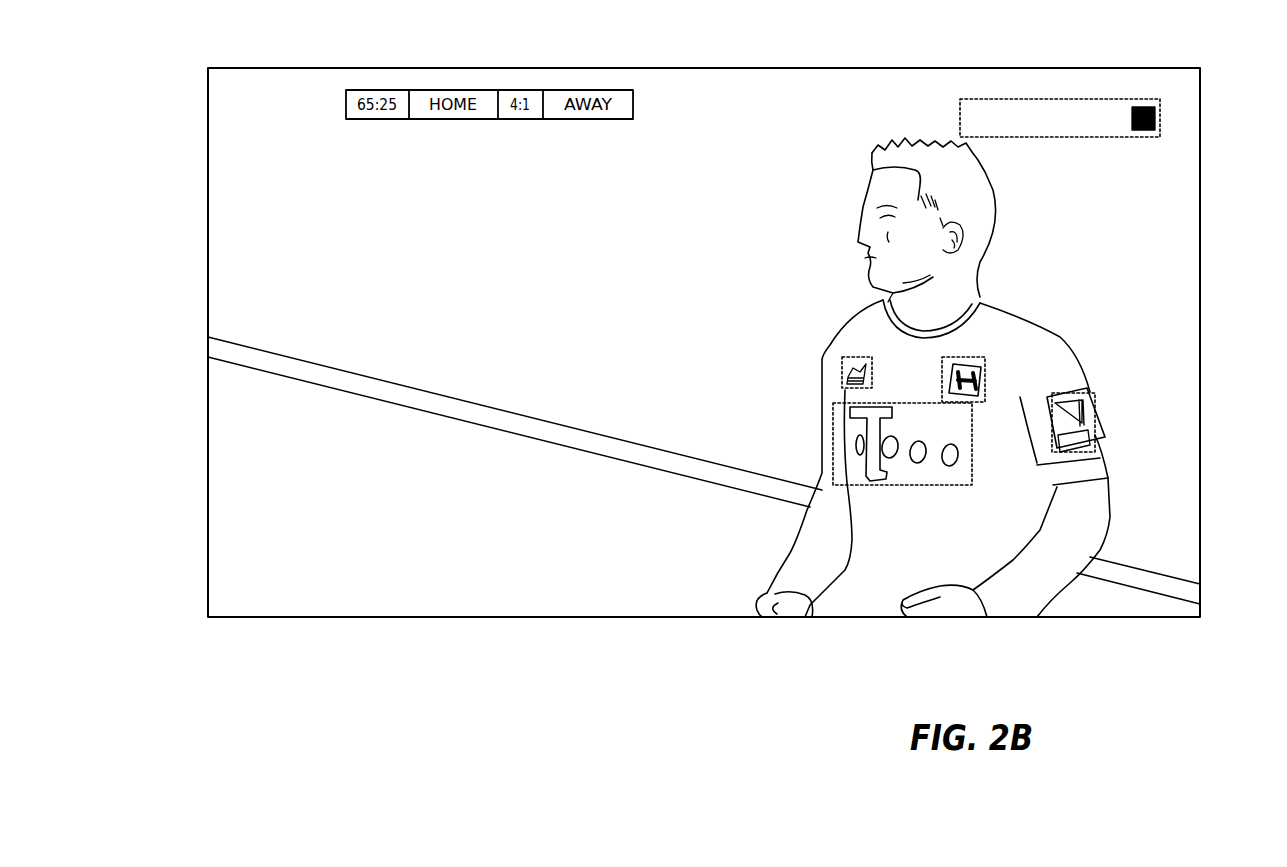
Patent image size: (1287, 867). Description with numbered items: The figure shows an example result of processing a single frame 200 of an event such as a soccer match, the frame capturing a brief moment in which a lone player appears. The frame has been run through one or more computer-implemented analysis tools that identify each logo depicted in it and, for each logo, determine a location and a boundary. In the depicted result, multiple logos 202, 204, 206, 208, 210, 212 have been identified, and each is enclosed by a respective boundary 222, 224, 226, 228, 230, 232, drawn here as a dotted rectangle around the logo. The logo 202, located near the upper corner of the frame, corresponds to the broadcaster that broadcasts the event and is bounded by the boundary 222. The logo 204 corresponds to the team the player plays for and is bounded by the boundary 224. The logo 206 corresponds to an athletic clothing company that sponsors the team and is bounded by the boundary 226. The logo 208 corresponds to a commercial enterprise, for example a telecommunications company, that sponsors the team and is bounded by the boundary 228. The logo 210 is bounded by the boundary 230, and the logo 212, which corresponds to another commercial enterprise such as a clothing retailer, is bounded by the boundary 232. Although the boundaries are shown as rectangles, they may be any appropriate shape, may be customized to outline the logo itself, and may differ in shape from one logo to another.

The frame 200 is at (740, 68).
The logo 202 is at (1107, 133).
The logo 204 is at (968, 365).
The logo 206 is at (856, 372).
The logo 208 is at (857, 443).
The logo 210 is at (1090, 402).
The logo 212 is at (1098, 438).
The boundary 222 is at (1038, 138).
The boundary 224 is at (985, 380).
The boundary 226 is at (842, 357).
The boundary 228 is at (832, 415).
The boundary 230 is at (1090, 393).
The boundary 232 is at (1098, 440).